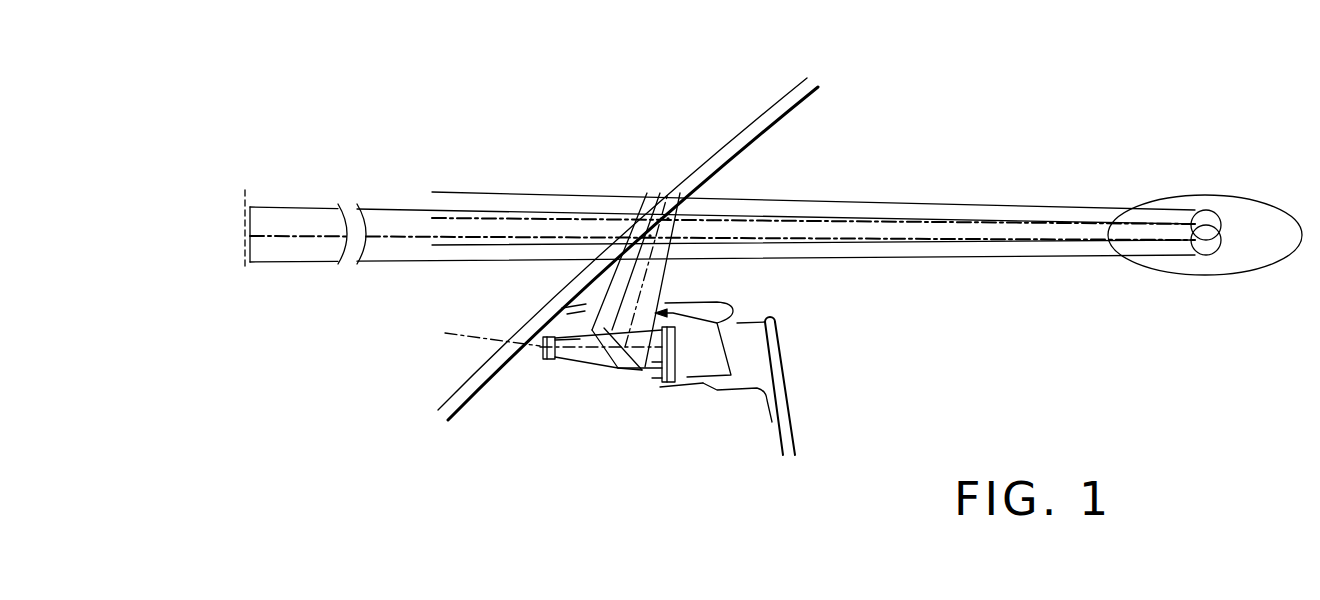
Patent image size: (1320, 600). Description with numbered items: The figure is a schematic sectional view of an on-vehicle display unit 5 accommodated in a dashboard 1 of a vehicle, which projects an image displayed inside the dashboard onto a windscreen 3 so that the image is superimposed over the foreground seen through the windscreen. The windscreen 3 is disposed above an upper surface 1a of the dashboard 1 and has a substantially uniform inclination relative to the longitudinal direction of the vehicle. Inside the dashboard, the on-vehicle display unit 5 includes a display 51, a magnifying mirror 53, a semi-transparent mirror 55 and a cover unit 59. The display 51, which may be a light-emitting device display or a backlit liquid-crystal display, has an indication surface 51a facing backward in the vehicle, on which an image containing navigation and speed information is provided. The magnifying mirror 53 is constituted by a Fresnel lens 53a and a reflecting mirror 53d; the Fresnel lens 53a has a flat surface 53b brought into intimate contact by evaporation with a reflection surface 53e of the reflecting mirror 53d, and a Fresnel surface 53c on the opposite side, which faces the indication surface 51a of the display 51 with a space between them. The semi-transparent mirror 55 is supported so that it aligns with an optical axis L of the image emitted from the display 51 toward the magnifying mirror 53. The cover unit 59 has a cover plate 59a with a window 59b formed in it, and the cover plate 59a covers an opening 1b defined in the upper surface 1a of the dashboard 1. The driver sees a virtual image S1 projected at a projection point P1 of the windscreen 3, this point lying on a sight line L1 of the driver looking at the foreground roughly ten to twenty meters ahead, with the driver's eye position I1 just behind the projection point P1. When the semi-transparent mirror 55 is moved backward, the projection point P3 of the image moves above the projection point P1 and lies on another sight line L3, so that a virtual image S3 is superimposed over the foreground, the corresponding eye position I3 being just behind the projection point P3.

The dashboard 1 is at (737, 303).
The upper surface 1a is at (668, 302).
The opening 1b is at (578, 298).
The windscreen 3 is at (745, 130).
The on-vehicle display unit 5 is at (603, 382).
The display 51 is at (547, 362).
The indication surface 51a is at (560, 366).
The magnifying mirror 53 is at (672, 392).
The Fresnel lens 53a is at (652, 364).
The flat surface 53b is at (724, 346).
The Fresnel surface 53c is at (653, 380).
The reflecting mirror 53d is at (708, 394).
The reflection surface 53e is at (662, 390).
The semi-transparent mirror 55 is at (590, 330).
The cover unit 59 is at (851, 384).
The cover plate 59a is at (775, 321).
The window 59b is at (740, 343).
The optical axis L is at (552, 280).
The sight line L1 is at (547, 236).
The sight line L3 is at (467, 218).
The projection point P1 is at (646, 230).
The projection point P3 is at (666, 215).
The virtual image S1 is at (245, 266).
The virtual image S3 is at (245, 205).
The eye position I1 is at (1212, 256).
The eye position I3 is at (1214, 213).